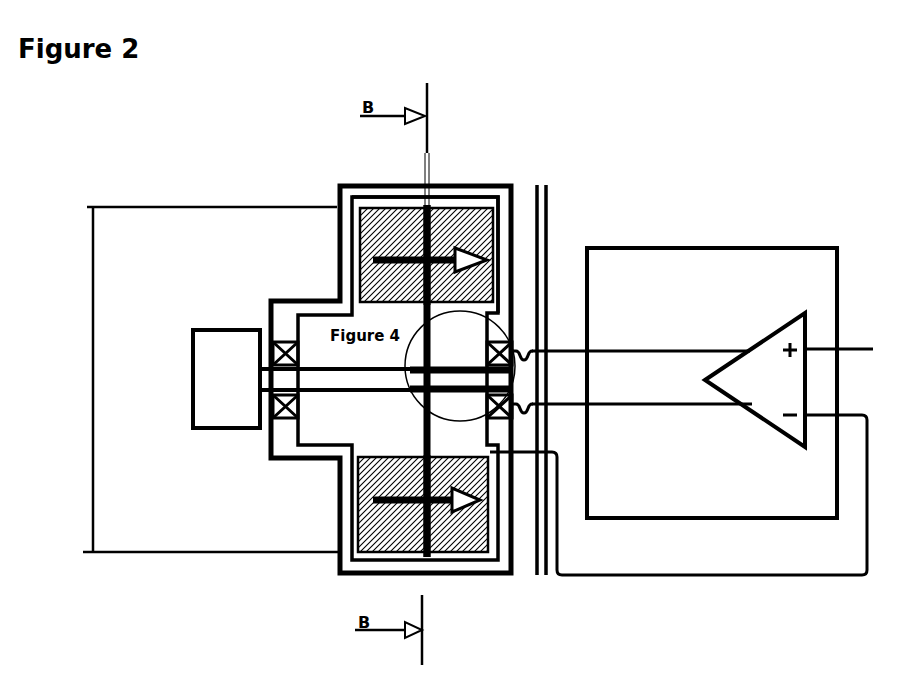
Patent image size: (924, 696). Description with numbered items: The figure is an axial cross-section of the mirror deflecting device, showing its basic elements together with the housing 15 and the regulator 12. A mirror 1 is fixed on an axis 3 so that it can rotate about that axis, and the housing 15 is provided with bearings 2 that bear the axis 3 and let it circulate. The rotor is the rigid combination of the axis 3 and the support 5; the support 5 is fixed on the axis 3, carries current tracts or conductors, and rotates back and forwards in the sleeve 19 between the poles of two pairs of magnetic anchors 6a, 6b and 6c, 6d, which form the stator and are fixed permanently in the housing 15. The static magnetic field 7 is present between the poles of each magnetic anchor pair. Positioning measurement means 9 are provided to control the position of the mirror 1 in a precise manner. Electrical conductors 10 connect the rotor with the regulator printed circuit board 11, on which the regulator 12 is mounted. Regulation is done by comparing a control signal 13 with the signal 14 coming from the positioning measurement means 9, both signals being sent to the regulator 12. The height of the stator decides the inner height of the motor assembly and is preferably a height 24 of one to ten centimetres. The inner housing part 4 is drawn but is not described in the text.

The mirror 1 is at (212, 400).
The bearings 2 is at (490, 355).
The axis 3 is at (288, 380).
The inner housing 4 is at (347, 277).
The support 5 is at (388, 543).
The magnet anchor 6a is at (430, 197).
The magnet anchor 6b is at (463, 202).
The magnet anchor 6c is at (413, 558).
The magnet anchor 6d is at (452, 553).
The static magnetic field 7 is at (480, 205).
The positioning measurement means 9 is at (388, 543).
The electrical conductors 10 is at (673, 400).
The regulator printed circuit board 11 is at (548, 186).
The regulator 12 is at (712, 383).
The control signal 13 is at (855, 350).
The signal 14 is at (600, 580).
The housing 15 is at (365, 565).
The sleeve 19 is at (413, 374).
The height 24 is at (202, 379).